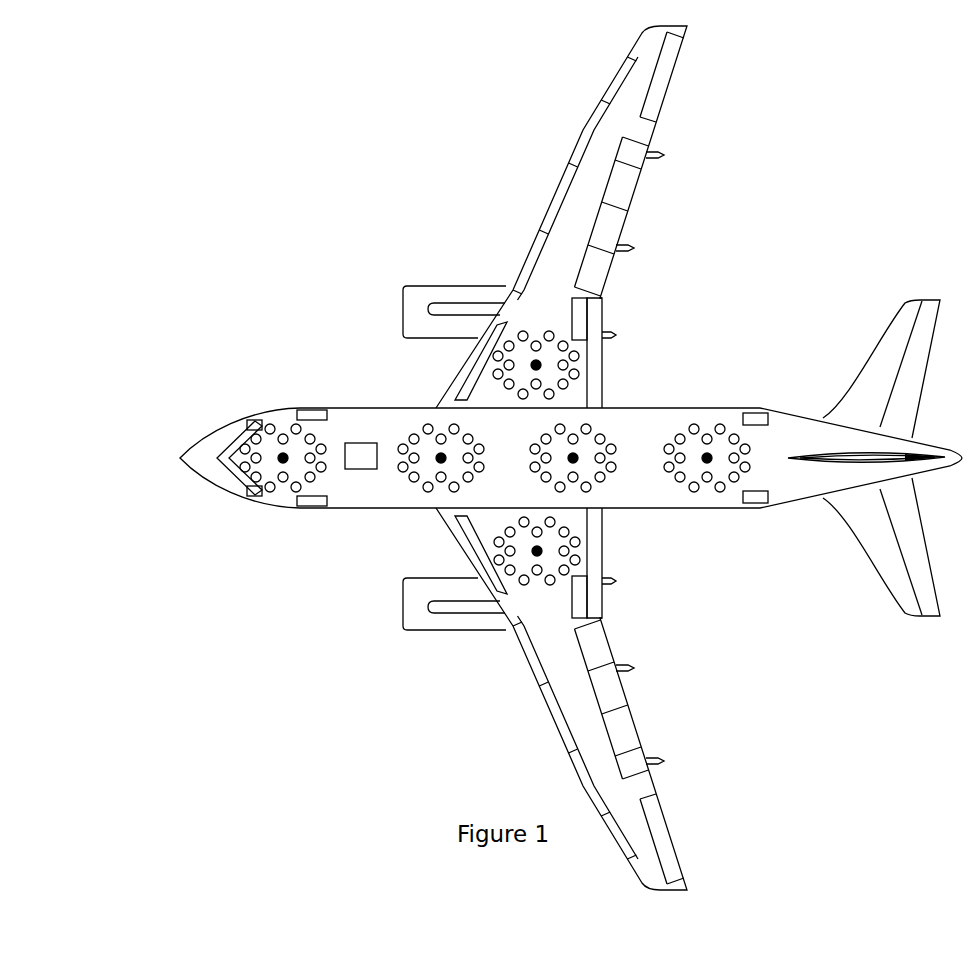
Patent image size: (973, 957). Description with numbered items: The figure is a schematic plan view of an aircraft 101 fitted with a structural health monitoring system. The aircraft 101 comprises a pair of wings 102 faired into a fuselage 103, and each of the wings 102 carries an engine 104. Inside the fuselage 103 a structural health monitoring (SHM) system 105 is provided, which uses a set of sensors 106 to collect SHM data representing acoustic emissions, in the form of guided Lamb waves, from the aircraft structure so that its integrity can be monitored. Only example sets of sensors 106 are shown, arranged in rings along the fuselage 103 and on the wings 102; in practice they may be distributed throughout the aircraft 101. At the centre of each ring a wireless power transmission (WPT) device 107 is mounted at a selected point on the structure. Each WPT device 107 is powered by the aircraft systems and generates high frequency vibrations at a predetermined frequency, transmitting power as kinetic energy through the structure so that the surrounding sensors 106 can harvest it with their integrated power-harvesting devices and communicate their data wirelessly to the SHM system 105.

The aircraft 101 is at (128, 309).
The wings 102 is at (657, 45).
The fuselage 103 is at (790, 497).
The engine 104 is at (418, 314).
The structural health monitoring (SHM) system 105 is at (361, 443).
The sensors 106 is at (521, 330).
The wireless power transmission (WPT) device 107 is at (283, 458).